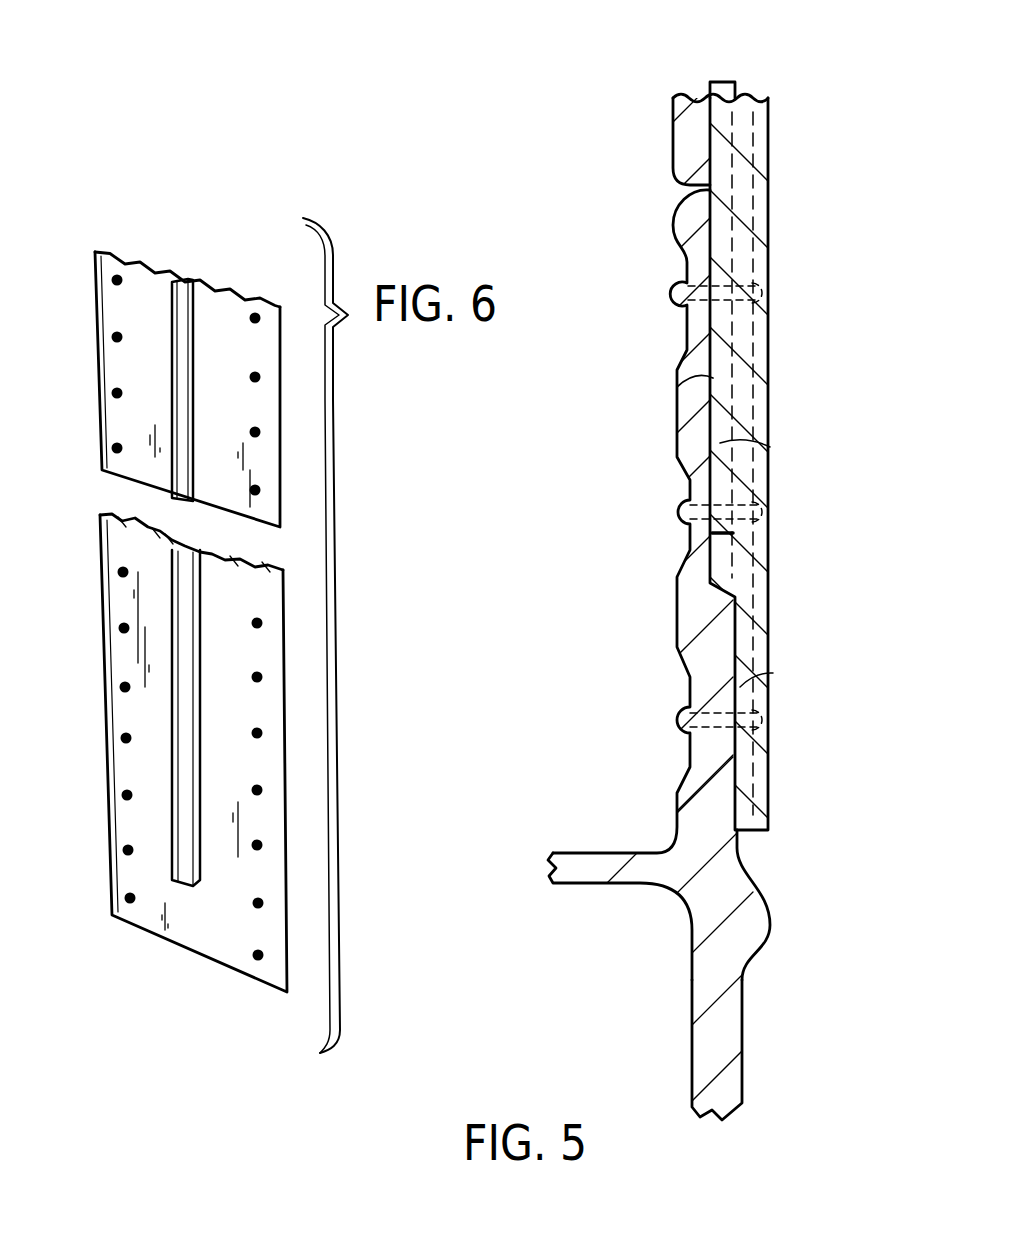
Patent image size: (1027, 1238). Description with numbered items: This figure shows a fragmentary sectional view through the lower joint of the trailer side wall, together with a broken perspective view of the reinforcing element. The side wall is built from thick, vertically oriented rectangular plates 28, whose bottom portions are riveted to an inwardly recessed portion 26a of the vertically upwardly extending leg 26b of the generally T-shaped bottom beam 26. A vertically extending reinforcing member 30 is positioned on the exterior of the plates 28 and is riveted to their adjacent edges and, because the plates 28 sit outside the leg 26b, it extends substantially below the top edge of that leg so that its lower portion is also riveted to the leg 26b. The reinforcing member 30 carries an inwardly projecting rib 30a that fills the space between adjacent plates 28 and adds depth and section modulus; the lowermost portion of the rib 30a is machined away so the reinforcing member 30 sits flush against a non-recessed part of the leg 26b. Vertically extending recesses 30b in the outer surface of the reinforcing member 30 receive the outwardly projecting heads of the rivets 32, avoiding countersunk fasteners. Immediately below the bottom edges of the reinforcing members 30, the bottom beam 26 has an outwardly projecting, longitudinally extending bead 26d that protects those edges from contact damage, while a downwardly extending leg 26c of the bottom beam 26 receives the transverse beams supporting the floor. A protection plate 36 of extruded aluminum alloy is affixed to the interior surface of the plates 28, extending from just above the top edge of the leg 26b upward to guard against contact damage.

In FIG. 5, the bottom beam 26 is at (720, 862).
In FIG. 5, the inwardly recessed portion 26a is at (770, 447).
In FIG. 5, the vertically upwardly extending leg 26b is at (773, 673).
In FIG. 5, the downwardly extending leg 26c is at (743, 1013).
In FIG. 5, the bead 26d is at (755, 920).
In FIG. 5, the plate 28 is at (712, 79).
In FIG. 6, the reinforcing member 30 is at (117, 317).
In FIG. 5, the reinforcing member 30 is at (768, 217).
In FIG. 6, the rib 30a is at (180, 280).
In FIG. 5, the rib 30a is at (677, 387).
In FIG. 5, the recess 30b is at (757, 543).
In FIG. 5, the rivet 32 is at (770, 278).
In FIG. 5, the protection plate 36 is at (673, 143).